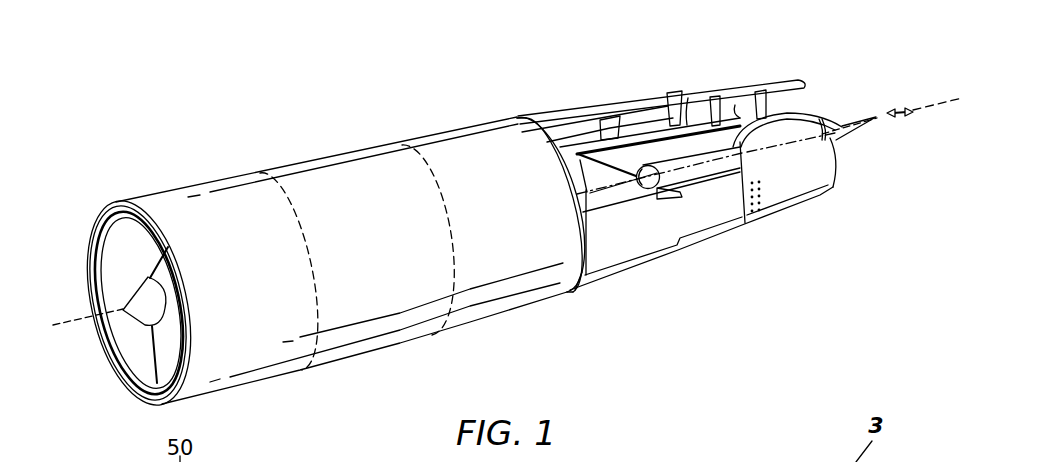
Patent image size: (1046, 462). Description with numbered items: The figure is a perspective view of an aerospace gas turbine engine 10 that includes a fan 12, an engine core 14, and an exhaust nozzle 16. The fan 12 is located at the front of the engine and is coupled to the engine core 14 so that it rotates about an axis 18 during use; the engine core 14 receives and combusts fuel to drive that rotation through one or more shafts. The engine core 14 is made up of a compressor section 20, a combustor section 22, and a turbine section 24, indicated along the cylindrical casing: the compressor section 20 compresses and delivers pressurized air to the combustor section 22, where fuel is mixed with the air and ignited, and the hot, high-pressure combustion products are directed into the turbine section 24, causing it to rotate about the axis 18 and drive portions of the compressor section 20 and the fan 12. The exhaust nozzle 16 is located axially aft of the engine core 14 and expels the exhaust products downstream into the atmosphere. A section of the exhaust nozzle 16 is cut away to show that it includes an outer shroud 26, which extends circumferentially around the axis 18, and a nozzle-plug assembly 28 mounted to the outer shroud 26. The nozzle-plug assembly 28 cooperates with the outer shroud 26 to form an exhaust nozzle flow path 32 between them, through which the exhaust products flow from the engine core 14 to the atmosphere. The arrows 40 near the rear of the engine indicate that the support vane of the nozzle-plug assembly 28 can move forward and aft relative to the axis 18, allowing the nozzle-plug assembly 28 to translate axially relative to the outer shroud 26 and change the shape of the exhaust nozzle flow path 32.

The gas turbine engine 10 is at (193, 87).
The fan 12 is at (118, 239).
The engine core 14 is at (319, 180).
The exhaust nozzle 16 is at (575, 82).
The axis 18 is at (80, 320).
The compressor section 20 is at (198, 207).
The combustor section 22 is at (362, 166).
The turbine section 24 is at (457, 148).
The outer shroud 26 is at (687, 105).
The nozzle-plug assembly 28 is at (820, 90).
The exhaust nozzle flow path 32 is at (723, 111).
The arrows 40 is at (900, 120).